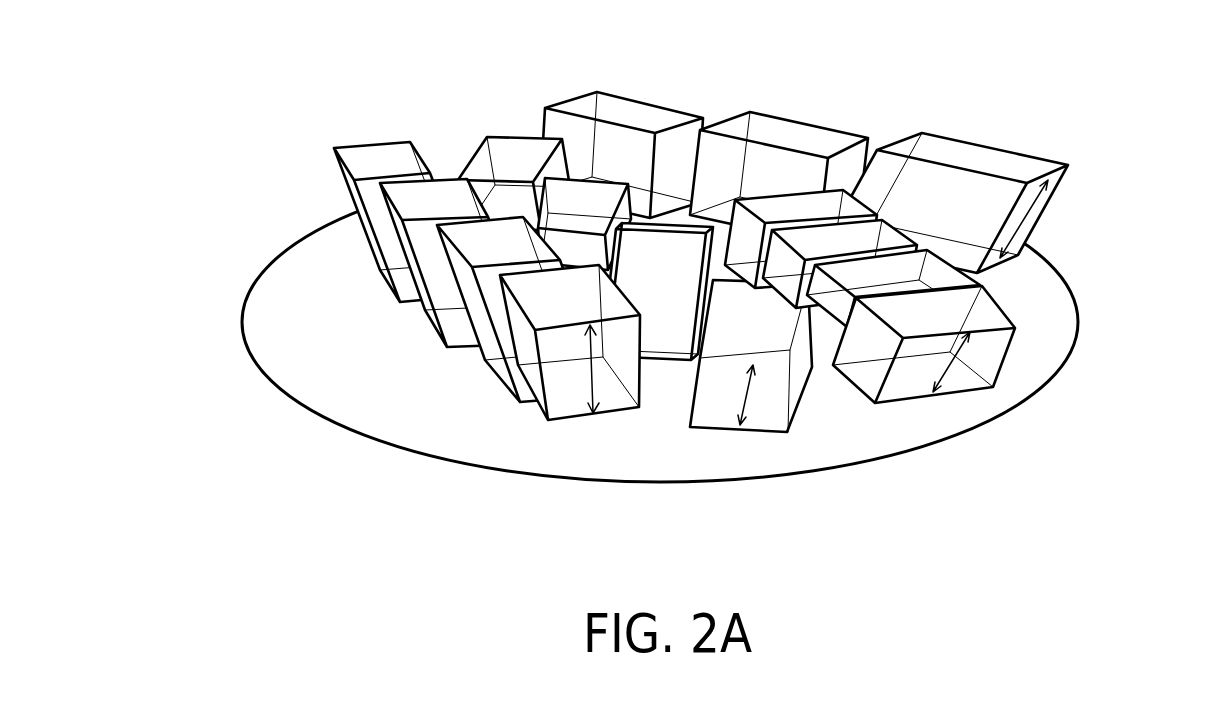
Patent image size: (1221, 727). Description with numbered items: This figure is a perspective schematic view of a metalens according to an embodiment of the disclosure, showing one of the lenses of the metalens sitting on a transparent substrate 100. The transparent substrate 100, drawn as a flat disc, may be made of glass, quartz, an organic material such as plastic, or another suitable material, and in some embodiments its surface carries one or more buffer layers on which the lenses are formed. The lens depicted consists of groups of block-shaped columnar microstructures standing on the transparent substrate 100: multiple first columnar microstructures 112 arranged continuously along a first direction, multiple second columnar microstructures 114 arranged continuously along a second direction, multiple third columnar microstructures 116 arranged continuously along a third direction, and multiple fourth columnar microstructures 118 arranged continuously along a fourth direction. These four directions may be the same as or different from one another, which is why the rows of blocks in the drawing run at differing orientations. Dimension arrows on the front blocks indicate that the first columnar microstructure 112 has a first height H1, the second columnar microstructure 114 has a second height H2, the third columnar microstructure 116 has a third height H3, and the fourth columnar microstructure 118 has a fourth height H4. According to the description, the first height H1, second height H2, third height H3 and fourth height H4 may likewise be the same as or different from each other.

The transparent substrate 100 is at (1050, 298).
The first columnar microstructures 112 is at (548, 310).
The second columnar microstructures 114 is at (585, 190).
The third columnar microstructures 116 is at (957, 270).
The fourth columnar microstructures 118 is at (943, 147).
The first height H1 is at (590, 380).
The second height H2 is at (750, 395).
The third height H3 is at (937, 383).
The fourth height H4 is at (1027, 222).